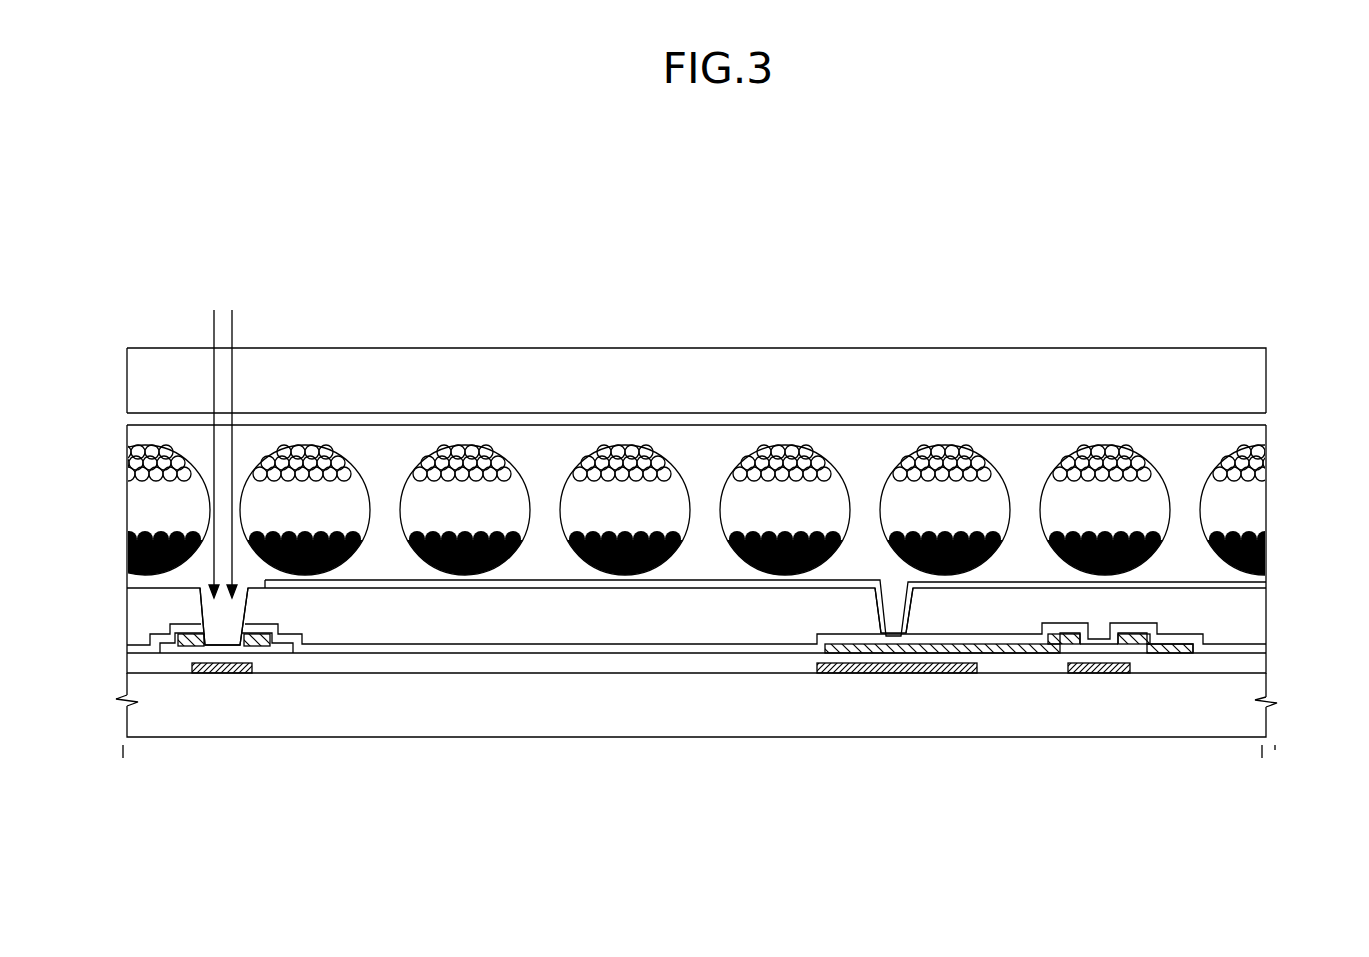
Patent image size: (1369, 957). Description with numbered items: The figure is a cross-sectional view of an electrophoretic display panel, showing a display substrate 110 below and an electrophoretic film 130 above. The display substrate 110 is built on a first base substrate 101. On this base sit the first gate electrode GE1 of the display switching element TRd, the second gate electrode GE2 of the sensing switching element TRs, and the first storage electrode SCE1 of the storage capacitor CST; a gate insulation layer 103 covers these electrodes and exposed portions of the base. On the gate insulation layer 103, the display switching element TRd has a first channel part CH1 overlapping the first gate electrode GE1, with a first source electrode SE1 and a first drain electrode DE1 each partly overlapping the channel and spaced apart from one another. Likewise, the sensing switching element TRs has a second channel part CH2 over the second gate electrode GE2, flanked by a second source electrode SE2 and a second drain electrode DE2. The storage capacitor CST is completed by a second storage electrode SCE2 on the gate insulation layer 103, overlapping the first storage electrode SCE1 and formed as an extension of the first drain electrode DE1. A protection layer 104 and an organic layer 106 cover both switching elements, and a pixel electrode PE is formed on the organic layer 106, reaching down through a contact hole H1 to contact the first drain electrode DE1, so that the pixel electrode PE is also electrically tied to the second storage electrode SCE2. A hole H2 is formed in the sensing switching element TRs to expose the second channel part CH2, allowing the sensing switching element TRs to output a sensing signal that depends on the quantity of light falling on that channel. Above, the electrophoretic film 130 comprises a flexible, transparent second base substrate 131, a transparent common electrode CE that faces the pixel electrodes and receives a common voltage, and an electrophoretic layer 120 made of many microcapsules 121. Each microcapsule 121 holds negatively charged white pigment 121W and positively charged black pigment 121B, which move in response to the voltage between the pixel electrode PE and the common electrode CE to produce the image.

The electrophoretic film 130 is at (115, 350).
The second base substrate 131 is at (1257, 382).
The common electrode CE is at (1257, 421).
The electrophoretic layer 120 is at (709, 543).
The microcapsule 121 is at (940, 447).
The white pigment 121W is at (456, 447).
The black pigment 121B is at (470, 560).
The display substrate 110 is at (115, 593).
The first base substrate 101 is at (1257, 716).
The gate insulation layer 103 is at (1257, 664).
The protection layer 104 is at (1257, 649).
The organic layer 106 is at (1257, 614).
The pixel electrode PE is at (625, 590).
The contact hole H1 is at (892, 602).
The hole H2 is at (212, 611).
The sensing switching element TRs is at (242, 741).
The second source electrode SE2 is at (170, 647).
The second gate electrode GE2 is at (218, 673).
The second channel part CH2 is at (247, 649).
The second drain electrode DE2 is at (313, 650).
The storage capacitor CST is at (938, 746).
The first storage electrode SCE1 is at (888, 673).
The second storage electrode SCE2 is at (957, 653).
The display switching element TRd is at (1117, 741).
The first drain electrode DE1 is at (1020, 653).
The first gate electrode GE1 is at (1103, 673).
The first channel part CH1 is at (1128, 648).
The first source electrode SE1 is at (1167, 650).